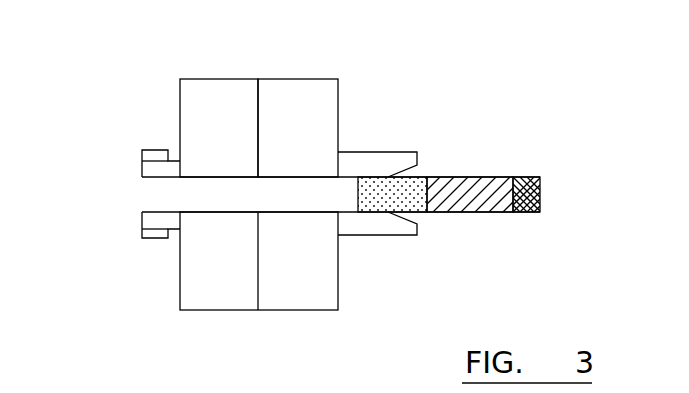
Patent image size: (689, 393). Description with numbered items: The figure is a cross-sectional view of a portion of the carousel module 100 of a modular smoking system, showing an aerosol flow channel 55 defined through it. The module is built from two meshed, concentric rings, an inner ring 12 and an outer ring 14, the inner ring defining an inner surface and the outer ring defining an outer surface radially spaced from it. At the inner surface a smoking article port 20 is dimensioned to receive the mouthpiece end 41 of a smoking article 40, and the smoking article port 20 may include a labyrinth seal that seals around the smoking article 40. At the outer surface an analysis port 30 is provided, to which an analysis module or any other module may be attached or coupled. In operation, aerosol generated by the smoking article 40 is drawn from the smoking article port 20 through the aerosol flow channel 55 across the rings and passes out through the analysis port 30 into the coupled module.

The inner ring 12 is at (302, 86).
The outer ring 14 is at (213, 86).
The smoking article port 20 is at (373, 228).
The analysis port 30 is at (150, 165).
The smoking article 40 is at (478, 214).
The mouthpiece end 41 is at (413, 190).
The aerosol flow channel 55 is at (223, 193).
The assembly 100 is at (82, 388).